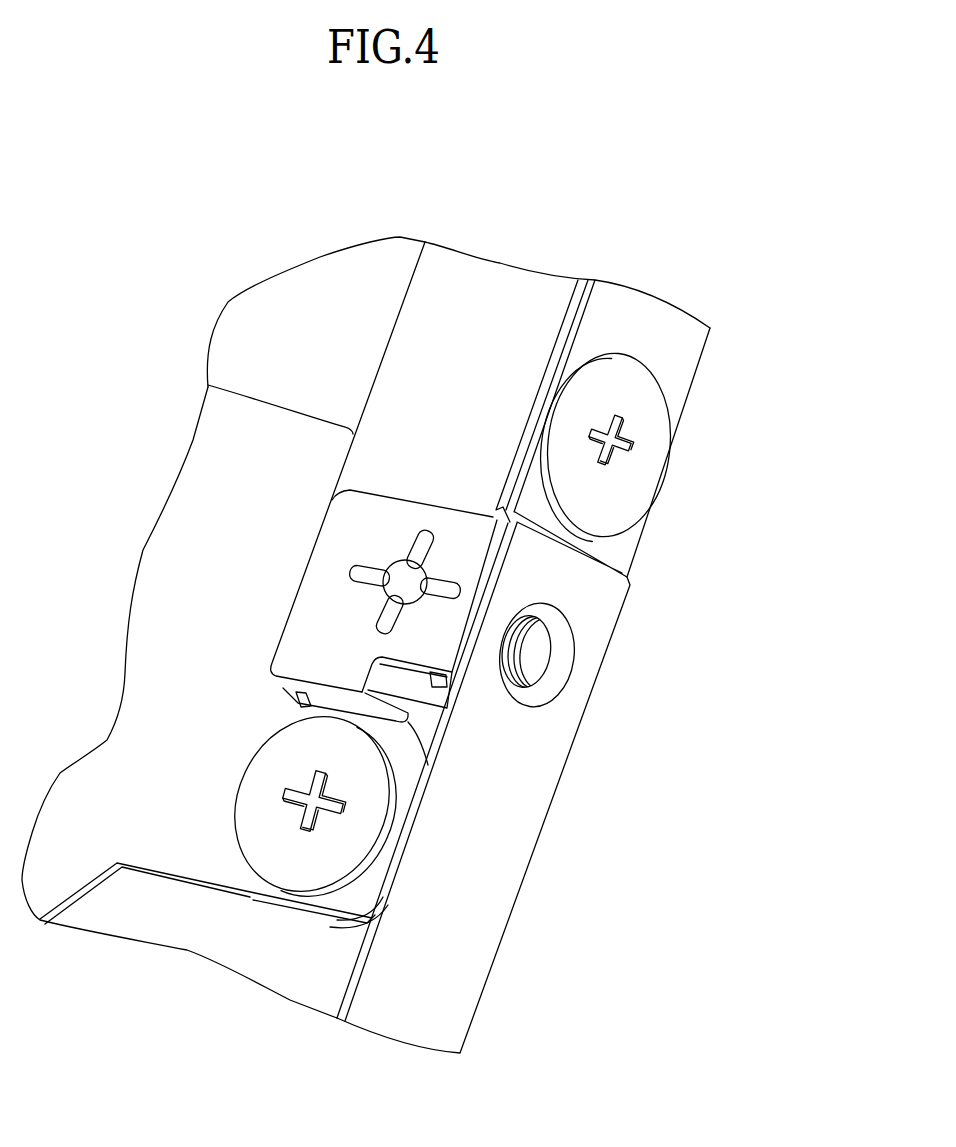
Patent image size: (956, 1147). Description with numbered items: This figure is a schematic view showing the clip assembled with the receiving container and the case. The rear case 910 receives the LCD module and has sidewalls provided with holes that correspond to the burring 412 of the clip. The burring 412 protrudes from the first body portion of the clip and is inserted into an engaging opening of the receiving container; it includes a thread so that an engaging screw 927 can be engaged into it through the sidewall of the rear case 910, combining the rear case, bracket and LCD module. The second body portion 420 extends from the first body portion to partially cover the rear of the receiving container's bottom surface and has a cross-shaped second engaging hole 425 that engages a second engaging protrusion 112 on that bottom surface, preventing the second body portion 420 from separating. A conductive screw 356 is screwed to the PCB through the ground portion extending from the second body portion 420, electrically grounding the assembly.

The rear case 910 is at (487, 910).
The engaging screw 927 is at (657, 467).
The burring 412 is at (543, 665).
The second body portion 420 is at (297, 626).
The second engaging protrusion 112 is at (368, 563).
The second engaging hole 425 is at (443, 582).
The conductive screw 356 is at (248, 798).